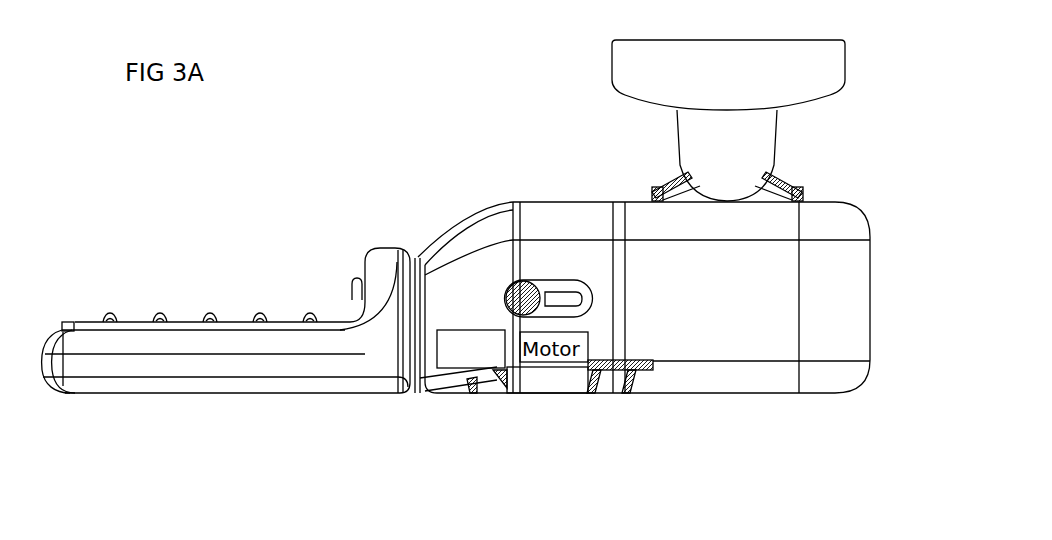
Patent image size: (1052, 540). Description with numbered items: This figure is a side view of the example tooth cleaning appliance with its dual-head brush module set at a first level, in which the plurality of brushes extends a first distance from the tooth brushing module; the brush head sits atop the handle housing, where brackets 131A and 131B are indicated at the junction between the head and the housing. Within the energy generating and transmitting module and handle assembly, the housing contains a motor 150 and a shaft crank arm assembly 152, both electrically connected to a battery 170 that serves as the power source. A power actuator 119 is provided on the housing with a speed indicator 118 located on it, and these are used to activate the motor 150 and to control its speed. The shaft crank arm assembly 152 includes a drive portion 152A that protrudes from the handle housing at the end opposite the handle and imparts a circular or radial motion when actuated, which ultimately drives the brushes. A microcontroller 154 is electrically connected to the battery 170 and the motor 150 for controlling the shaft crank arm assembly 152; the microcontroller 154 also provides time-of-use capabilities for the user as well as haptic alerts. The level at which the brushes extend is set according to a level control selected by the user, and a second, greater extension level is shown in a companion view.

The power actuator 119 is at (513, 256).
The speed indicator 118 is at (490, 282).
The battery 170 is at (463, 330).
The first mounting bracket 131A is at (667, 168).
The second mounting bracket 131B is at (792, 167).
The motor 150 is at (497, 375).
The microcontroller 154 is at (520, 393).
The shaft crank arm assembly 152 is at (590, 370).
The drive portion 152A is at (625, 370).